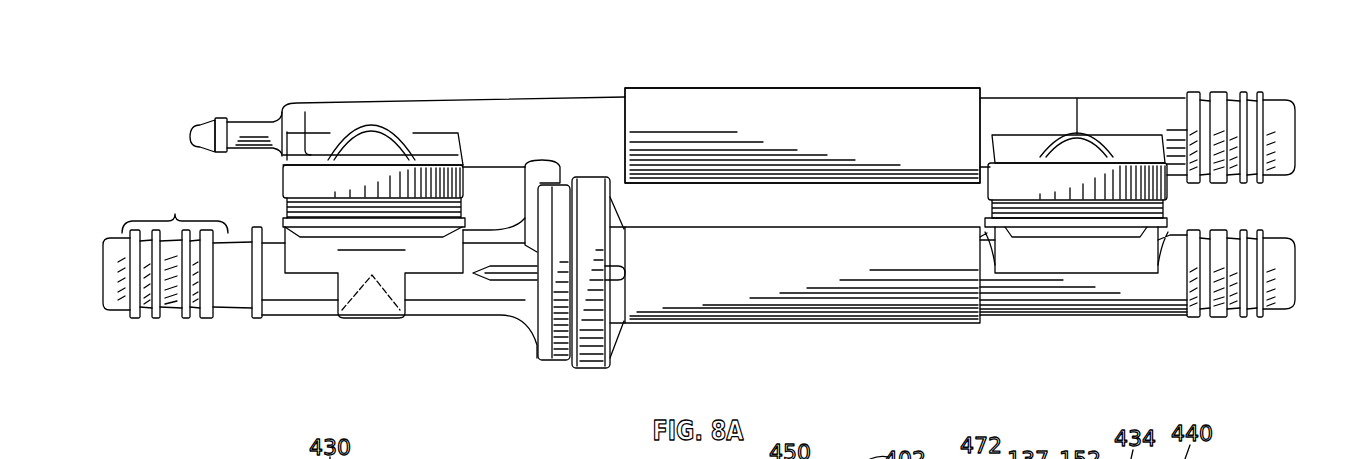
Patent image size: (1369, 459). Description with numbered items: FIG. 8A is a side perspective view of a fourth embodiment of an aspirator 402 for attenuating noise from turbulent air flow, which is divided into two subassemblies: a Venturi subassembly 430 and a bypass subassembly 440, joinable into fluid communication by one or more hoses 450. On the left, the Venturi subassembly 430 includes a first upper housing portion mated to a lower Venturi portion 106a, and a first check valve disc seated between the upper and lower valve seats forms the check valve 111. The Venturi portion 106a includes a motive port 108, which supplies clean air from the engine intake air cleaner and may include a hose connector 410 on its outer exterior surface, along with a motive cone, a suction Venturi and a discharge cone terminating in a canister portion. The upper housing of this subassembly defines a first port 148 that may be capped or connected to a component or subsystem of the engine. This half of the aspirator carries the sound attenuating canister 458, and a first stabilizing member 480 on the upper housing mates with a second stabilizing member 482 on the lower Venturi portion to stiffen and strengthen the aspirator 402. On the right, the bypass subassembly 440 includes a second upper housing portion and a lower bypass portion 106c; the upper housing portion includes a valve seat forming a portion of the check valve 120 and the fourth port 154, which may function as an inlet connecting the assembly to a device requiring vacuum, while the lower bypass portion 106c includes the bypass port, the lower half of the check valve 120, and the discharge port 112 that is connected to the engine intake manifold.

The motive port 108 is at (103, 295).
The hose connector 410 is at (175, 209).
The Venturi portion 106a is at (295, 305).
The first port 148 is at (188, 135).
The Venturi subassembly 430 is at (453, 97).
The check valve 111 is at (280, 198).
The second stabilizing member 482 is at (528, 187).
The first stabilizing member 480 is at (538, 173).
The sound attenuating canister 458 is at (615, 339).
The hose 450 is at (733, 86).
The aspirator 402 is at (896, 86).
The bypass subassembly 440 is at (1078, 86).
The check valve 120 is at (1168, 211).
The lower bypass portion 106c is at (1065, 305).
The fourth port 154 is at (1297, 130).
The discharge port 112 is at (1297, 292).